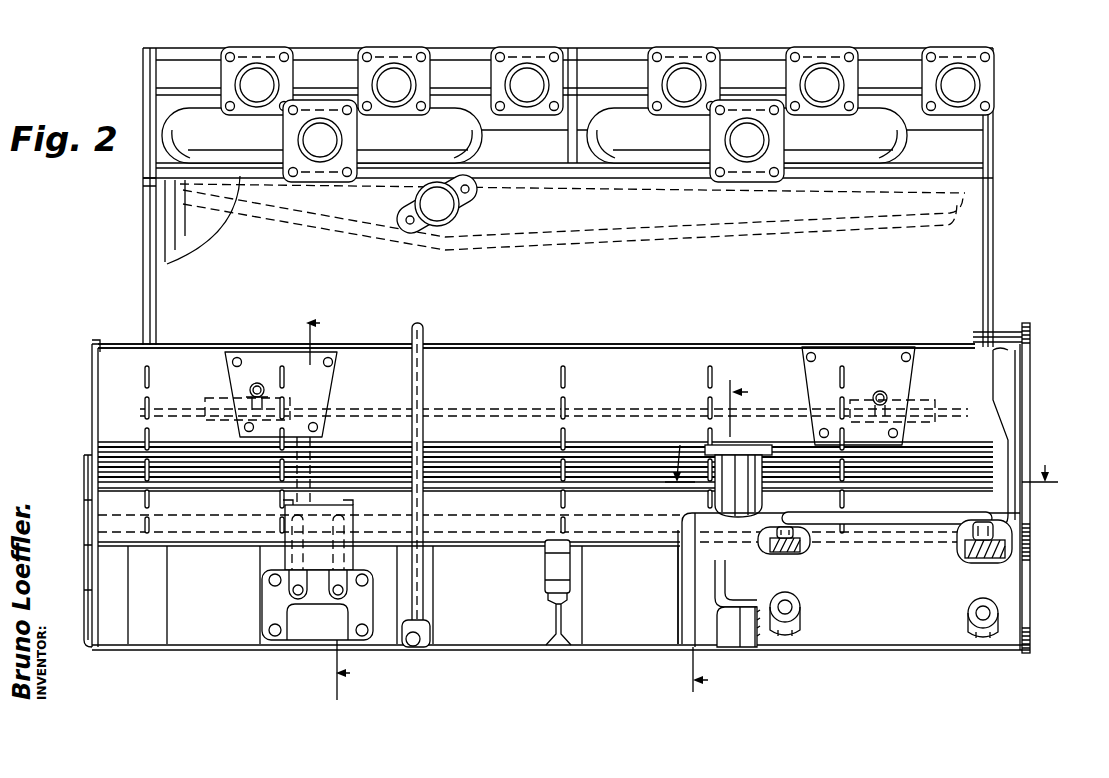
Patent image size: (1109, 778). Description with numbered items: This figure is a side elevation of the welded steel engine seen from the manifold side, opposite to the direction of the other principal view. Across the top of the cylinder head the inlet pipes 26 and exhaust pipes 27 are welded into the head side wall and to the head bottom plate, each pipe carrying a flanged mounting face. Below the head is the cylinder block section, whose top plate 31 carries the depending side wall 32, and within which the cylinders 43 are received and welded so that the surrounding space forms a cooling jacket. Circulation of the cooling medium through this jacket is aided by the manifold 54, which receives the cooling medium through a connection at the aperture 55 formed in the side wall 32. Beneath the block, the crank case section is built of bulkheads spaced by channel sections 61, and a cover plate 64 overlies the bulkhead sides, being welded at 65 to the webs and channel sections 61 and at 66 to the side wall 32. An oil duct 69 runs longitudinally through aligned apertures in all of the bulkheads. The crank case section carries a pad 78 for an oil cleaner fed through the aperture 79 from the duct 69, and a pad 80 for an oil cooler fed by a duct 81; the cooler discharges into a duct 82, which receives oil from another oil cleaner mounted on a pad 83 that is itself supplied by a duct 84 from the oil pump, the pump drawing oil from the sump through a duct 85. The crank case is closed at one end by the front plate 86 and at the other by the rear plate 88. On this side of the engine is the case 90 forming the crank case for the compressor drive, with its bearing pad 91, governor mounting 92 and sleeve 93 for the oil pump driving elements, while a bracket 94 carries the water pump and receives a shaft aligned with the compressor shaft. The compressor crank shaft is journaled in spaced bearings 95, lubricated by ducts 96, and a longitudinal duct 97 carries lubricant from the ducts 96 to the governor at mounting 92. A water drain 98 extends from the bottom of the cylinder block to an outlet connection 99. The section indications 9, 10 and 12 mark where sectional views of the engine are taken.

The section line 9- 9 is at (332, 501).
The section line 10- 10 is at (730, 535).
The section line 12- 12 is at (864, 453).
The inlet pipe 26 is at (386, 153).
The exhaust pipe 27 is at (393, 74).
The top plate 31 is at (985, 183).
The side wall 32 is at (920, 246).
The cylinder 43 is at (168, 243).
The manifold 54 is at (238, 178).
The aperture 55 is at (463, 198).
The channel section 61 is at (228, 626).
The cover plate 64 is at (610, 368).
The weld 65 is at (198, 542).
The weld 66 is at (553, 344).
The oil duct 69 is at (213, 395).
The pad 78 is at (833, 365).
The aperture 79 is at (879, 390).
The pad 80 is at (253, 362).
The duct 81 is at (262, 385).
The duct 82 is at (288, 502).
The pad 83 is at (280, 620).
The duct 84 is at (493, 533).
The duct 85 is at (733, 648).
The front plate 86 is at (1028, 438).
The rear plate 88 is at (92, 490).
The case 90 is at (918, 618).
The bearing pad 91 is at (988, 517).
The governor mounting 92 is at (718, 445).
The sleeve 93 is at (746, 610).
The bracket 94 is at (555, 620).
The bearing 95 is at (793, 551).
The duct 96 is at (805, 542).
The duct 97 is at (893, 542).
The water drain 98 is at (424, 396).
The outlet connection 99 is at (415, 636).